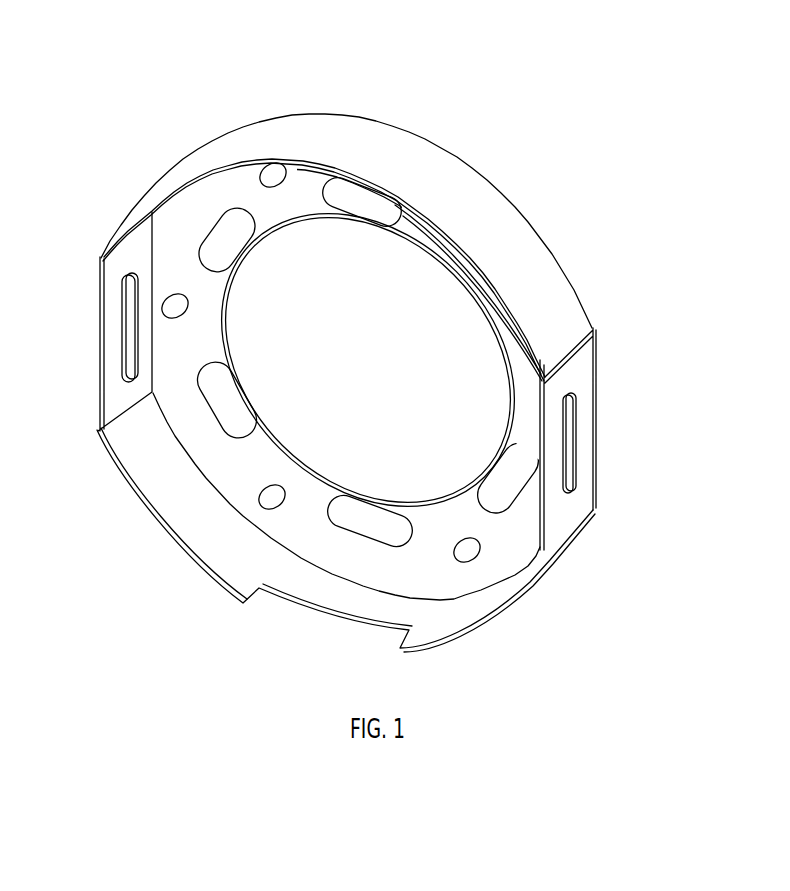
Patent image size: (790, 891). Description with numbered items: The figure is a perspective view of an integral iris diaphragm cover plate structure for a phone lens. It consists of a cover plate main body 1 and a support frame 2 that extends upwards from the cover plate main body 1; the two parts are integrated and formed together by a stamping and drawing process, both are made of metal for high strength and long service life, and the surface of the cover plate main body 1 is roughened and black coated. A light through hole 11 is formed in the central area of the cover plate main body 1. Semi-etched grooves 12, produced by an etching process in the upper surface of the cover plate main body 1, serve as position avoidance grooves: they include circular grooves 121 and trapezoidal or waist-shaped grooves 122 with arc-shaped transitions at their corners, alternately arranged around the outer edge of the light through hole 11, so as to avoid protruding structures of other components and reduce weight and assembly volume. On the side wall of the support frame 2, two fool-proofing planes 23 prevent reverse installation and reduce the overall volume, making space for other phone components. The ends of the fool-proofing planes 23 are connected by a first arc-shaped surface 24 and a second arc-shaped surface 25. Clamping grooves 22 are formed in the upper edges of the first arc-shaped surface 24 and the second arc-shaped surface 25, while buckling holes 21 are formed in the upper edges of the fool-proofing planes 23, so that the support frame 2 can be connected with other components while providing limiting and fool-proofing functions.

The cover plate main body 1 is at (497, 545).
The support frame 2 is at (233, 117).
The light through hole 11 is at (432, 350).
The semi-etched groove 12 is at (72, 138).
The circular groove 121 is at (172, 305).
The trapezoidal groove 122 is at (230, 222).
The buckling hole 21 is at (576, 440).
The clamping groove 22 is at (320, 168).
The fool-proofing plane 23 is at (582, 368).
The first arc-shaped surface 24 is at (553, 302).
The second arc-shaped surface 25 is at (460, 610).